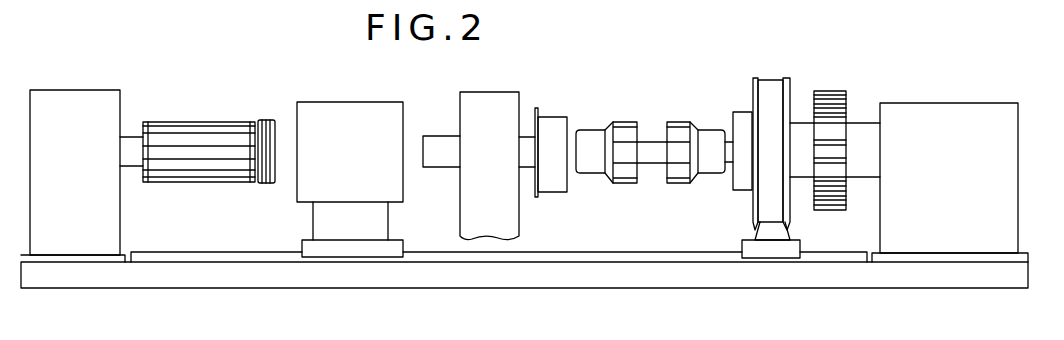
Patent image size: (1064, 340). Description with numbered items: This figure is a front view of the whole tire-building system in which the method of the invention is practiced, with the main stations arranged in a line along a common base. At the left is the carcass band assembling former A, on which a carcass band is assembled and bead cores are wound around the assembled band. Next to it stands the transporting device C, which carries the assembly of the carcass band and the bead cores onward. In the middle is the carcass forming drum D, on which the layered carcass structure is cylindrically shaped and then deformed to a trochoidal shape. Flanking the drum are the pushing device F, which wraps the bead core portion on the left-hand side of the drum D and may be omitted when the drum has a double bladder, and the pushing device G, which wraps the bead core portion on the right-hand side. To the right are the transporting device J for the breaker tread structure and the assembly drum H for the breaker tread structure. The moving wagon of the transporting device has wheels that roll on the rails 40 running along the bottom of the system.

The carcass band assembling former A is at (188, 120).
The transporting device for an assembly of the carcass band and the bead cores C is at (343, 101).
The carcass forming drum D is at (642, 127).
The pushing device F is at (550, 116).
The pushing device G is at (742, 112).
The assembly drum for a breaker tread structure H is at (828, 90).
The transporting device for the breaker tread structure J is at (765, 78).
The rails 40 is at (597, 253).